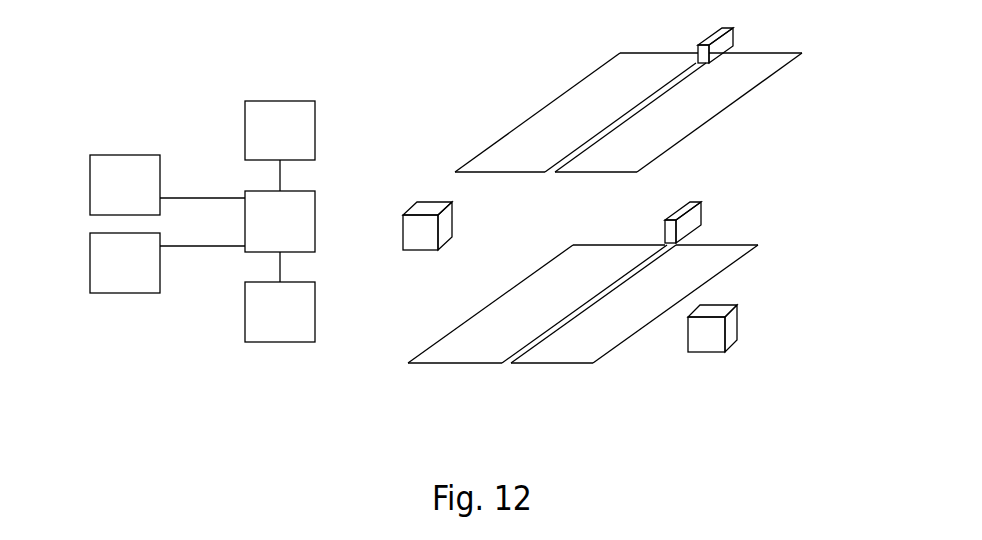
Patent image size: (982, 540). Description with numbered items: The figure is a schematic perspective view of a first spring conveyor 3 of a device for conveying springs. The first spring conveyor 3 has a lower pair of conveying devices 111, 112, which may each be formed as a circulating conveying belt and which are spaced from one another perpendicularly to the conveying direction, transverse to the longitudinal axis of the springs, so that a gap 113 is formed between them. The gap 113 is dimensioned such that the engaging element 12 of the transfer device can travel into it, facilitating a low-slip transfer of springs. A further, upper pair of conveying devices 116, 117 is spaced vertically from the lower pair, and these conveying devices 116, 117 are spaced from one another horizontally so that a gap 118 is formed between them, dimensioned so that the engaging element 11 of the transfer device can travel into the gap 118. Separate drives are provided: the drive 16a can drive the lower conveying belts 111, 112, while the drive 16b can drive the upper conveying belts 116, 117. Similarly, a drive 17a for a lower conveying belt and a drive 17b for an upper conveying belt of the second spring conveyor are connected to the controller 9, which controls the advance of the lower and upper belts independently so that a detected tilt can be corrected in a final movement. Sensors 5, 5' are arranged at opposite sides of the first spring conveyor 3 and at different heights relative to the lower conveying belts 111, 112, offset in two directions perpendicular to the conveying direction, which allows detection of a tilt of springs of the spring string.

The first spring conveyor 3 is at (612, 225).
The sensor 5 is at (728, 329).
The sensor 5' is at (415, 249).
The controller 9 is at (318, 204).
The engaging element 11 is at (733, 39).
The engaging element 12 is at (693, 232).
The drive 16a is at (246, 328).
The drive 16b is at (247, 148).
The drive 17a is at (90, 279).
The drive 17b is at (90, 202).
The conveying device 111 is at (596, 361).
The conveying device 112 is at (419, 355).
The gap 113 is at (502, 363).
The conveying device 116 is at (643, 168).
The conveying device 117 is at (465, 165).
The gap 118 is at (545, 171).